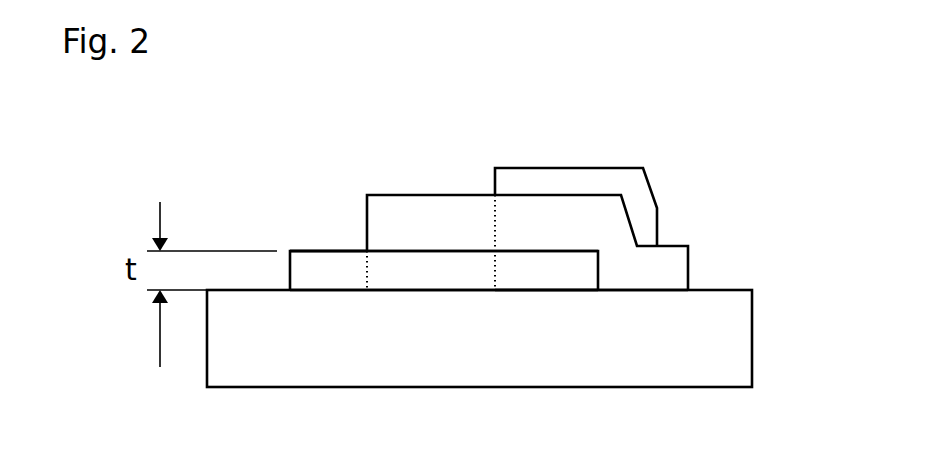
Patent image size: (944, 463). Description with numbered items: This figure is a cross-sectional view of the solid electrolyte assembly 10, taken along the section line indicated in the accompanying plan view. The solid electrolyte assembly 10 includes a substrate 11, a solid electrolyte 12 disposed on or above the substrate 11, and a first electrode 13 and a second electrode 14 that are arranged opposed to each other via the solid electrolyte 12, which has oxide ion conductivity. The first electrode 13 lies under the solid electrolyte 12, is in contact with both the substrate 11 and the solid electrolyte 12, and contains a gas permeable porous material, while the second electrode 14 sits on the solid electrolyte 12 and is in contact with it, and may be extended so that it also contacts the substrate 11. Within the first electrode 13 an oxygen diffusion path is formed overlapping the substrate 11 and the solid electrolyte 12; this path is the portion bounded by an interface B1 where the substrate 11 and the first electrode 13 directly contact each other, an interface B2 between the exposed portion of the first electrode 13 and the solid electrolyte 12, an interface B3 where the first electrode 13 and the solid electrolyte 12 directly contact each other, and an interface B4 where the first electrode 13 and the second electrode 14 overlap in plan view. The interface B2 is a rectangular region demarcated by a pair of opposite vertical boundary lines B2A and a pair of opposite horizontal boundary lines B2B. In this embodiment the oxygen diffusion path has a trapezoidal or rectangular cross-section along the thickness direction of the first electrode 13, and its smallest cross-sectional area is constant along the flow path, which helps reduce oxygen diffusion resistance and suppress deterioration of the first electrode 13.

The solid electrolyte assembly 10 is at (629, 118).
The substrate 11 is at (743, 337).
The solid electrolyte 12 is at (685, 252).
The first electrode 13 is at (315, 267).
The second electrode 14 is at (640, 177).
The interface B1 is at (418, 290).
The interface B2 is at (353, 268).
The vertical boundary lines B2A is at (300, 202).
The horizontal boundary lines B2B is at (240, 397).
The interface B3 is at (437, 252).
The interface B4 is at (497, 282).